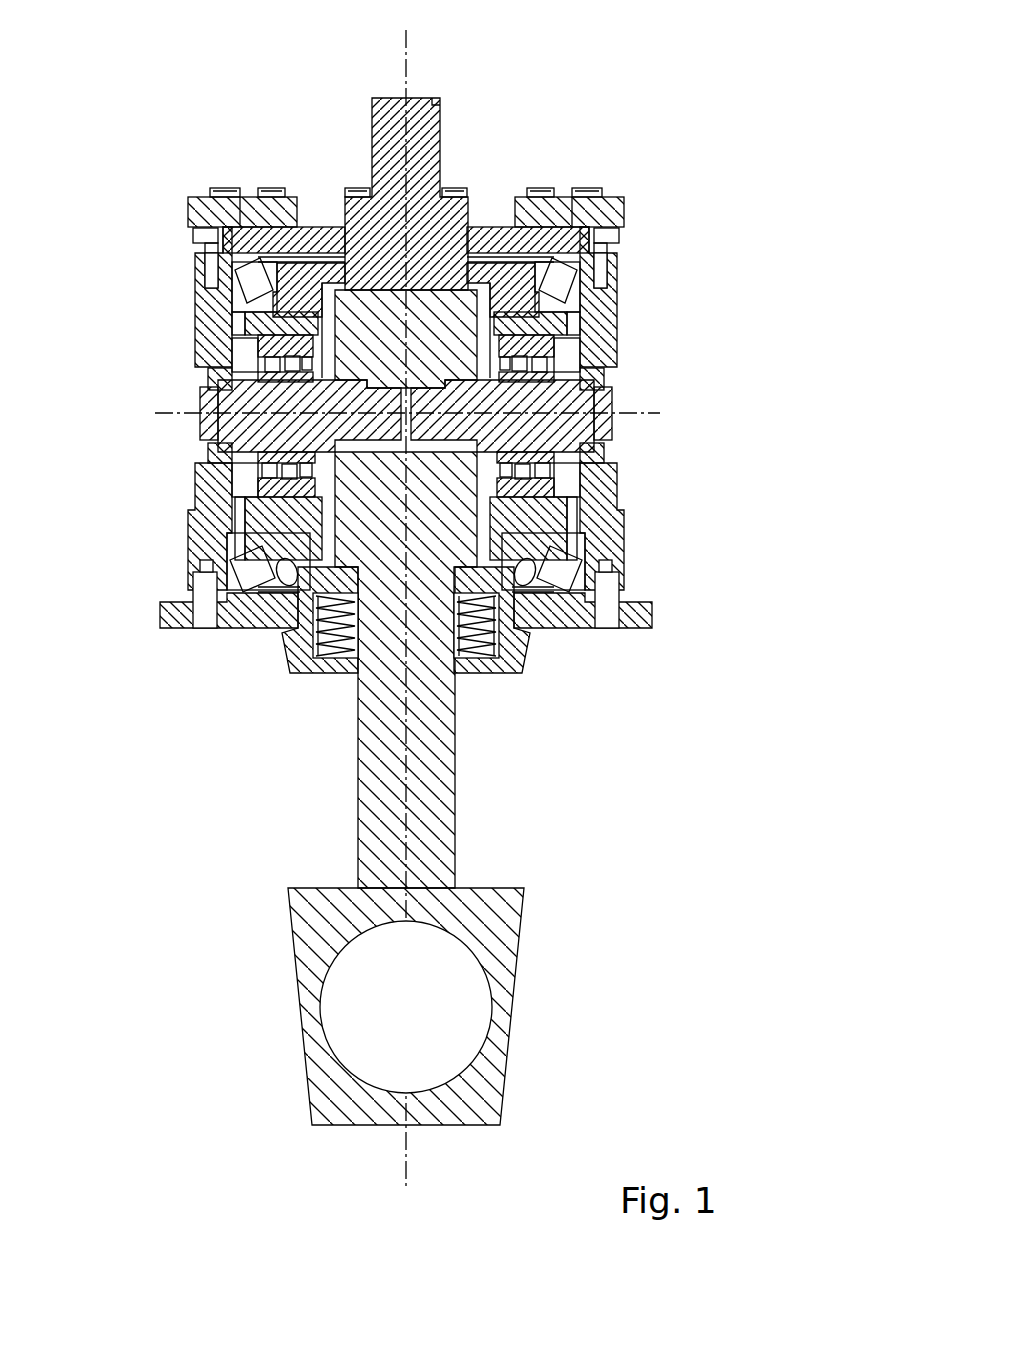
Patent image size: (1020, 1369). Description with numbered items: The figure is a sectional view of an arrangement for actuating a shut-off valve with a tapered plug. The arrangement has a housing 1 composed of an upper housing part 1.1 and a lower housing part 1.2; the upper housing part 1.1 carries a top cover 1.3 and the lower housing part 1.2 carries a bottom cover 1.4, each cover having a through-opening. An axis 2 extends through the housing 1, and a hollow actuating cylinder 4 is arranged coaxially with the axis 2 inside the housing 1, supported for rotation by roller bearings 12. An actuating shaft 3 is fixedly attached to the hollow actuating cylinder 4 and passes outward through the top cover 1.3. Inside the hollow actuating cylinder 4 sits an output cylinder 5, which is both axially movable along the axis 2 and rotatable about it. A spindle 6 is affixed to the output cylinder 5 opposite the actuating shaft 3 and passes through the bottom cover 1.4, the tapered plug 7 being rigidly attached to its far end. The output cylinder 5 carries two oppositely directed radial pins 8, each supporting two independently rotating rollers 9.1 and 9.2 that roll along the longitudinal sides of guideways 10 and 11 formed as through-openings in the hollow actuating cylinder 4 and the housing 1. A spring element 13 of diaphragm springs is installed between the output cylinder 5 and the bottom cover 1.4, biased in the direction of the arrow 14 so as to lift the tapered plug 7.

The housing 1 is at (457, 414).
The upper housing part 1.1 is at (598, 347).
The lower housing part 1.2 is at (602, 527).
The top cover 1.3 is at (538, 240).
The bottom cover 1.4 is at (500, 616).
The axis 2 is at (406, 70).
The actuating shaft 3 is at (418, 180).
The hollow actuating cylinder 4 is at (520, 307).
The output cylinder 5 is at (385, 338).
The spindle 6 is at (418, 752).
The tapered plug 7 is at (493, 948).
The pins 8 is at (288, 408).
The rotating roller 9.1 is at (220, 452).
The rotating roller 9.2 is at (285, 345).
The guideway 10 is at (255, 497).
The guideway 11 is at (202, 463).
The roller bearings 12 is at (248, 283).
The spring element 13 is at (477, 645).
The arrow 14 is at (507, 642).